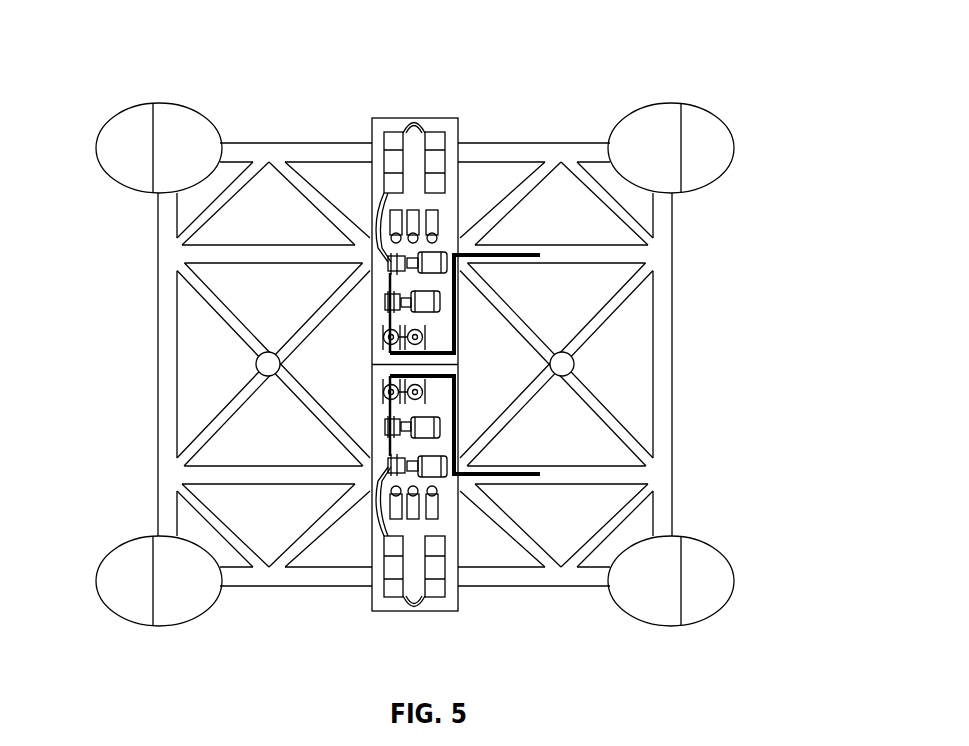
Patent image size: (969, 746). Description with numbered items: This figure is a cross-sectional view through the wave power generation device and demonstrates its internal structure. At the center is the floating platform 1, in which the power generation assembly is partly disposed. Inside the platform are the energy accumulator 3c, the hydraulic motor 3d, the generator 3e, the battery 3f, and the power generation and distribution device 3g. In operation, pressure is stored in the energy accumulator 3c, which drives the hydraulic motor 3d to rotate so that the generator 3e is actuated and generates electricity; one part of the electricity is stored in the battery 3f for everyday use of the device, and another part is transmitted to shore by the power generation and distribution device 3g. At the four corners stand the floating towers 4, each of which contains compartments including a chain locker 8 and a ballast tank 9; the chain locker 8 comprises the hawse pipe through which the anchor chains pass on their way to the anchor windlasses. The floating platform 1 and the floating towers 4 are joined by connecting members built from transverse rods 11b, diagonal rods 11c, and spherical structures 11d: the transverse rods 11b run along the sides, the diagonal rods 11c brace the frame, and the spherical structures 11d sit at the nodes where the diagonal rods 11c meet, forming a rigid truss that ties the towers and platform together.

The floating platform 1 is at (397, 634).
The floating tower 4 is at (180, 80).
The energy accumulator 3c is at (387, 347).
The hydraulic motor 3d is at (390, 310).
The generator 3e is at (388, 259).
The battery 3f is at (437, 217).
The power generation and distribution device 3g is at (395, 167).
The chain locker 8 is at (127, 593).
The ballast tank 9 is at (175, 598).
The transverse rod 11b is at (665, 340).
The diagonal rod 11c is at (608, 417).
The spherical structure 11d is at (562, 365).